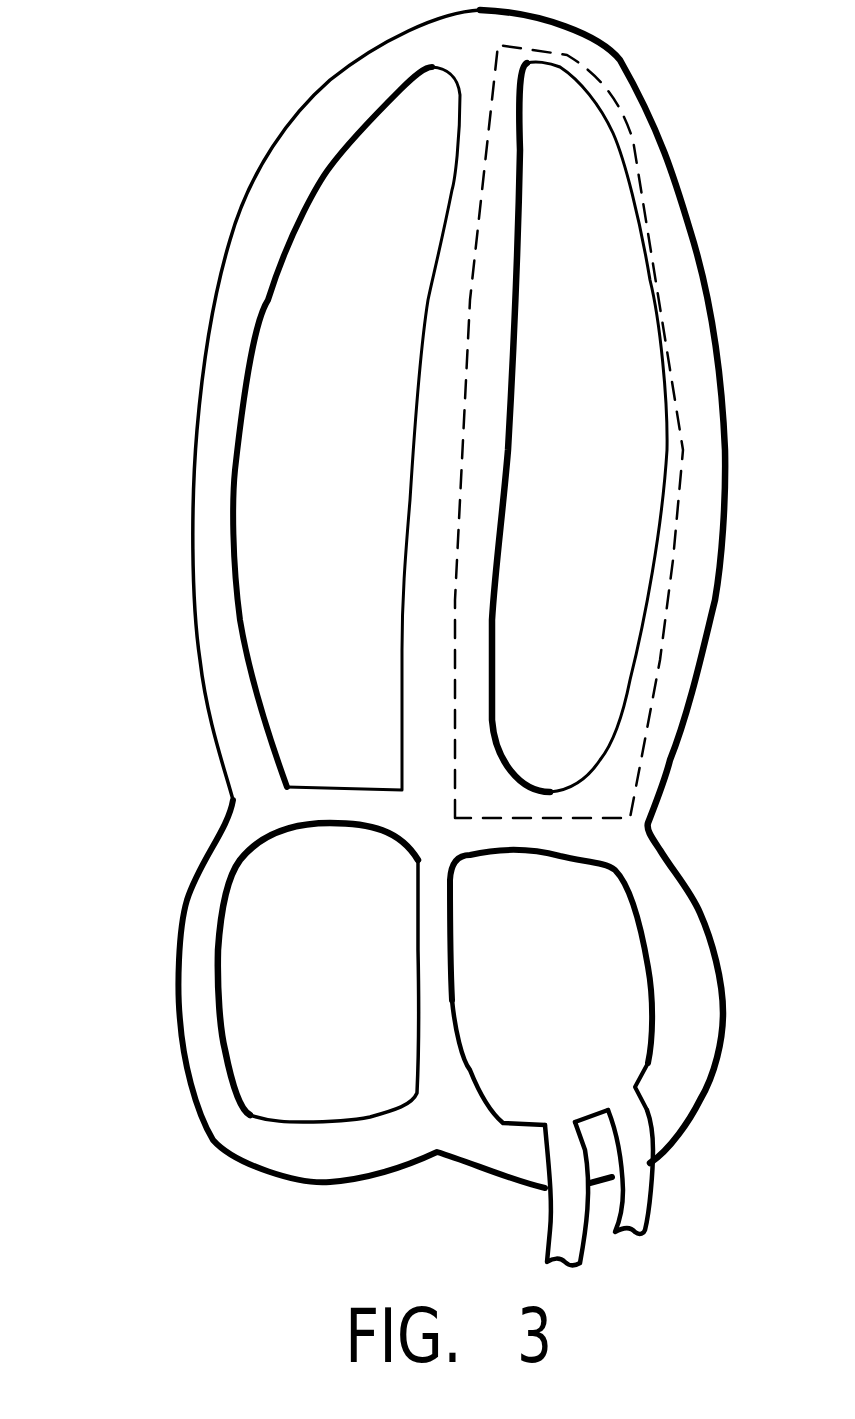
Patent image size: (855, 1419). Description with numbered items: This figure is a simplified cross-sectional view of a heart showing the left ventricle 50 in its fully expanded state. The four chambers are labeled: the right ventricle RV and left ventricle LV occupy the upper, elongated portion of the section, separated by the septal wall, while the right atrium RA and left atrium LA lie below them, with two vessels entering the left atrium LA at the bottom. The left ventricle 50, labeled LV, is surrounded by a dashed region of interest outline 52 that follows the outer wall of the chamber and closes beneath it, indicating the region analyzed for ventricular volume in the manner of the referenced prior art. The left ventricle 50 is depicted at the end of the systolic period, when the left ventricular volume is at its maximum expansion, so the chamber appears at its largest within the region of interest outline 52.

The left ventricle 50 is at (464, 638).
The region of interest outline 52 is at (560, 58).
The right ventricle RV is at (322, 553).
The left ventricle LV is at (578, 551).
The right atrium RA is at (332, 972).
The left atrium LA is at (580, 986).